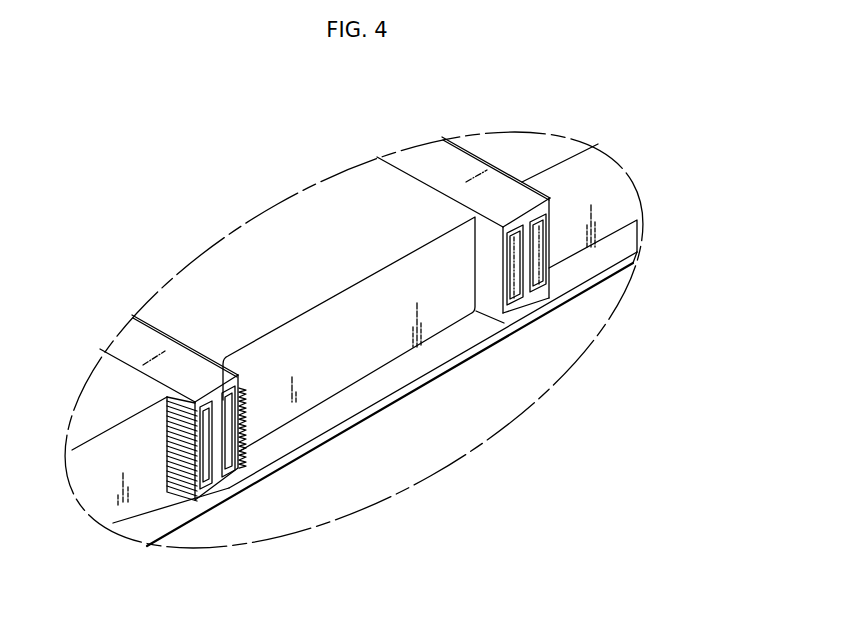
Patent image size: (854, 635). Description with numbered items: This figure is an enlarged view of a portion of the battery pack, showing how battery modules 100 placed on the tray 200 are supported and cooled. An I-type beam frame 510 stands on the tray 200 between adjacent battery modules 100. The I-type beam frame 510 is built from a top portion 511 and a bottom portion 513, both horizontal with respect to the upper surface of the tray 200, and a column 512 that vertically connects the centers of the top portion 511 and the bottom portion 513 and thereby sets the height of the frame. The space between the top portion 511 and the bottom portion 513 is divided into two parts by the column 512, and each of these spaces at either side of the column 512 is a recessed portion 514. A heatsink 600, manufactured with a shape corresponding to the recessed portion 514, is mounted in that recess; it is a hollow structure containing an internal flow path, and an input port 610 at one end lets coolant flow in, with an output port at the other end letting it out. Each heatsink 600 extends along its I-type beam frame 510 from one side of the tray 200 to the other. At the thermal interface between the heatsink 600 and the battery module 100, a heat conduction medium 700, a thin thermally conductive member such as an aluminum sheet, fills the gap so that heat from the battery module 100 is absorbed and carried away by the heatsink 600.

The battery module 100 is at (494, 148).
The tray 200 is at (357, 395).
The I-type beam frame 510 is at (136, 338).
The top portion 511 is at (517, 200).
The column 512 is at (553, 238).
The bottom portion 513 is at (524, 312).
The recessed portion 514 is at (490, 256).
The heatsink 600 is at (206, 508).
The input port 610 is at (229, 456).
The heat conduction medium 700 is at (168, 473).